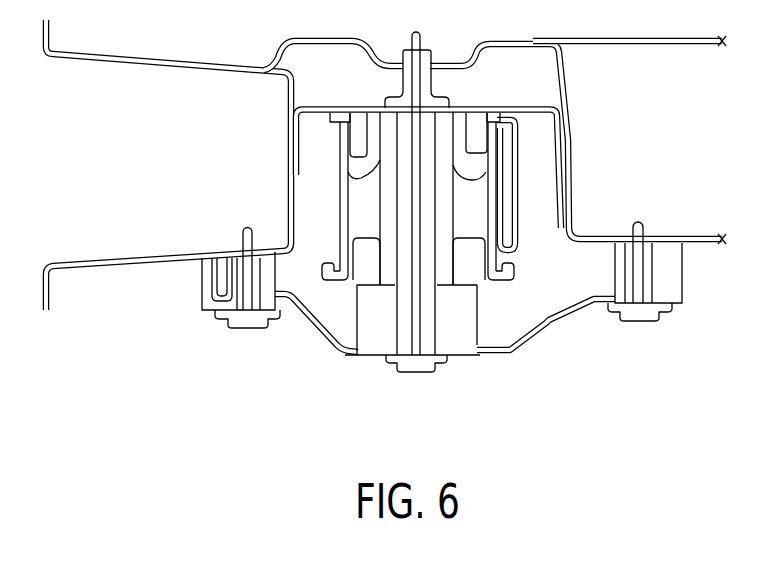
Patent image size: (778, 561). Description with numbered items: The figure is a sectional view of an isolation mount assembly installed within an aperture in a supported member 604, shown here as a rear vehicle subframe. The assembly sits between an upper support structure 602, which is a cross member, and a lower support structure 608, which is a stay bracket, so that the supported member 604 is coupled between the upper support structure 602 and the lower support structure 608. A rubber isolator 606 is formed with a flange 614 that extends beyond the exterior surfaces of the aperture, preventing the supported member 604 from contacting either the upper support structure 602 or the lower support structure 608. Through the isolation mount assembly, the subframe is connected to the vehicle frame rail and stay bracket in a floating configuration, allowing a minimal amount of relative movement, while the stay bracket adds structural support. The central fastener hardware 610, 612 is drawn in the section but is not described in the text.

The upper support structure 602 is at (566, 68).
The supported member 604 is at (517, 183).
The rubber isolator 606 is at (480, 220).
The lower support structure 608 is at (375, 340).
The nut 610 is at (418, 372).
The bolt / sleeve 612 is at (430, 308).
The flange 614 is at (332, 119).